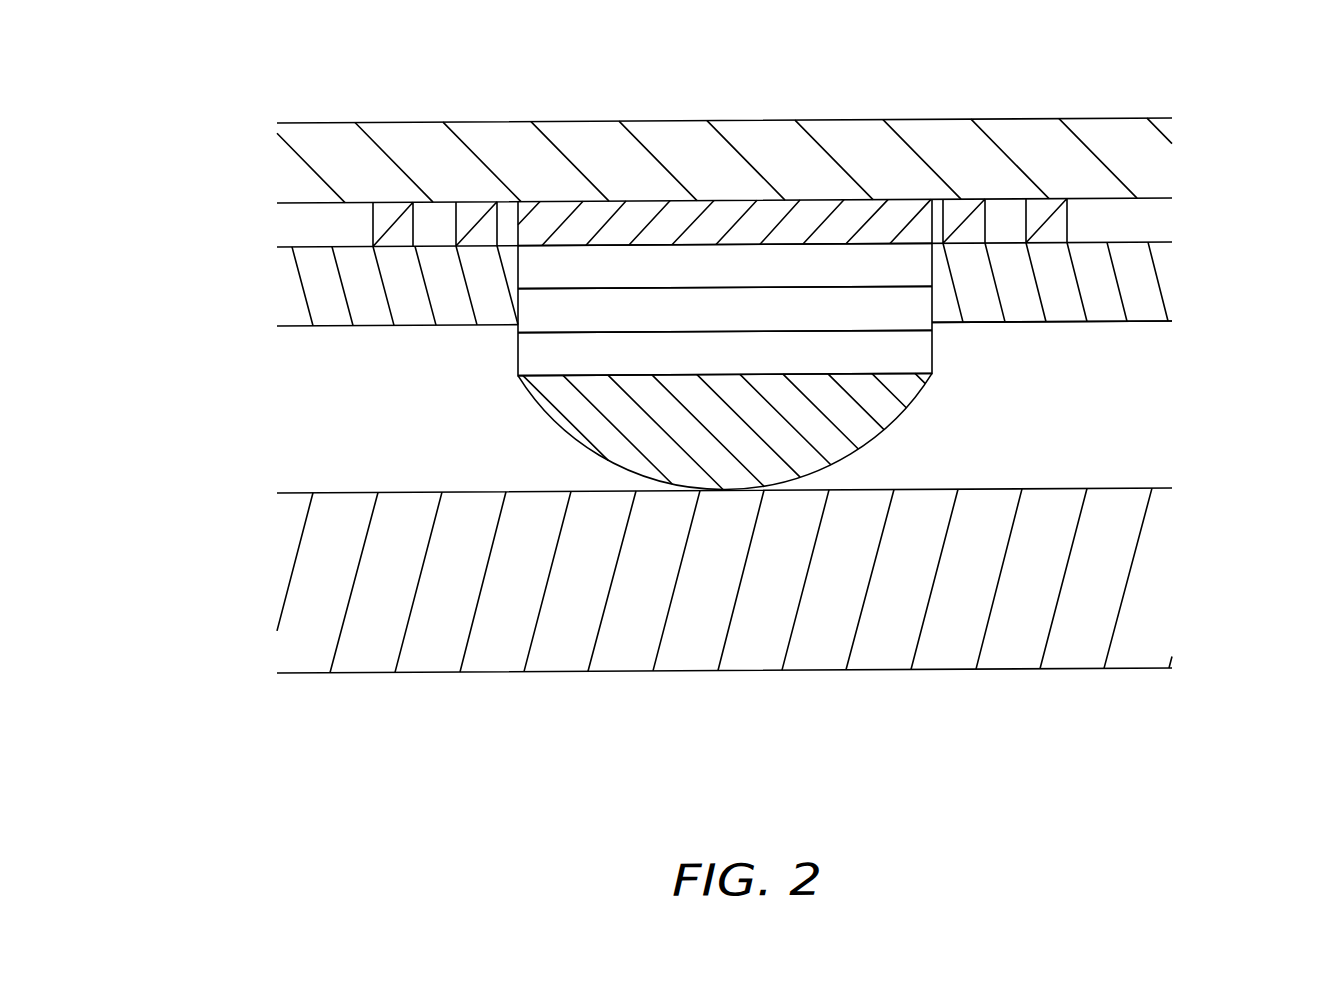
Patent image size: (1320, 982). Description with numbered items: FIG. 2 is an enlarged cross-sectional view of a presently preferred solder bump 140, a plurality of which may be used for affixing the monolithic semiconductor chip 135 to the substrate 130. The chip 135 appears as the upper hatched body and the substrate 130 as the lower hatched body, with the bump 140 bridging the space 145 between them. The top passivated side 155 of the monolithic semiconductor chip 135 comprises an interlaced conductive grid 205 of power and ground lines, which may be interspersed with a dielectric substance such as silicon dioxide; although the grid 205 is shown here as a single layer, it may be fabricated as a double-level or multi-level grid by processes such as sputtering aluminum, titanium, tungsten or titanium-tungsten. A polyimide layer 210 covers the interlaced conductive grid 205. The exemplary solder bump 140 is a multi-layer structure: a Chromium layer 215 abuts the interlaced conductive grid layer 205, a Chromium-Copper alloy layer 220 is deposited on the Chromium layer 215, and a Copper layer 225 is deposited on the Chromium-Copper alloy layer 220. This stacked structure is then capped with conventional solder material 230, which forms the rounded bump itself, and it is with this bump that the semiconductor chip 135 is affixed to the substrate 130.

The substrate 130 is at (367, 662).
The monolithic semiconductor chip 135 is at (1077, 127).
The solder bump 140 is at (524, 394).
The gap 145 is at (300, 401).
The top passivated side 155 is at (1163, 247).
The interlaced conductive grid 205 is at (1068, 227).
The polyimide layer 210 is at (1165, 326).
The Chromium layer 215 is at (699, 284).
The Chromium-Copper alloy layer 220 is at (699, 327).
The Copper layer 225 is at (699, 372).
The solder material 230 is at (867, 439).